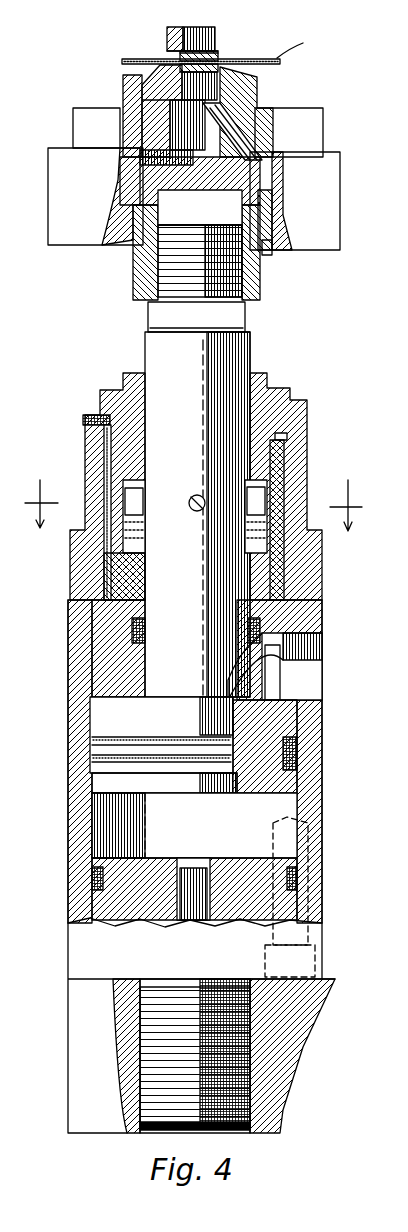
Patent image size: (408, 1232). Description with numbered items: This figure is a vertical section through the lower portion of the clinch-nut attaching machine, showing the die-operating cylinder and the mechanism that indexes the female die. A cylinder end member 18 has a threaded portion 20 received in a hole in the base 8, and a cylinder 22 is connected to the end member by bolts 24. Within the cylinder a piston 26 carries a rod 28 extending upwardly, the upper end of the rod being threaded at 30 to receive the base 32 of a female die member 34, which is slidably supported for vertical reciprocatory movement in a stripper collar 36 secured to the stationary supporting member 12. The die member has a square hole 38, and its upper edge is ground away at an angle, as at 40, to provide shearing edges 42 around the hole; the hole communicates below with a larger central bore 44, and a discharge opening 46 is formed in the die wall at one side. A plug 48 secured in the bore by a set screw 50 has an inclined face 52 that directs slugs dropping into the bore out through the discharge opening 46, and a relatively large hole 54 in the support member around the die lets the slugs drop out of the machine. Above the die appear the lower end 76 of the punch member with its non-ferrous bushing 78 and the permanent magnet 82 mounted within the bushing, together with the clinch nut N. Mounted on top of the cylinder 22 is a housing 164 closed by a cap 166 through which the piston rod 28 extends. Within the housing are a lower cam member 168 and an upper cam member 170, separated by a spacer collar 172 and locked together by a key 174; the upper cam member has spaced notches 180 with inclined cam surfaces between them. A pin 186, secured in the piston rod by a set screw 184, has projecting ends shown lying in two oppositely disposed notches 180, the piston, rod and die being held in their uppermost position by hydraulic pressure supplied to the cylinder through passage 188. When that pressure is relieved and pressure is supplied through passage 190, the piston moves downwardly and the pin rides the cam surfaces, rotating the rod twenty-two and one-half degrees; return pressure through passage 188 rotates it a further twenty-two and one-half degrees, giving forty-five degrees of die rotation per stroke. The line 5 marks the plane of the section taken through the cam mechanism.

The section line 5- 5 is at (190, 288).
The base 8 is at (88, 1083).
The stationary supporting member 12 is at (332, 183).
The cylinder end member 18 is at (87, 935).
The threaded portion 20 is at (177, 1108).
The cylinder 22 is at (105, 803).
The bolts 24 is at (320, 953).
The piston 26 is at (108, 715).
The piston rod 28 is at (152, 658).
The threaded upper end of piston rod 30 is at (170, 258).
The base of female die member 32 is at (150, 250).
The female die member 34 is at (157, 88).
The stripper collar 36 is at (265, 100).
The square hole 38 is at (217, 78).
The angled ground upper edge 40 is at (122, 62).
The shearing edges 42 is at (218, 53).
The central bore 44 is at (167, 100).
The discharge opening 46 is at (257, 135).
The plug 48 is at (173, 175).
The set screw 50 is at (157, 143).
The inclined face 52 is at (250, 168).
The hole 54 is at (267, 250).
The lower end of punch member 76 is at (167, 42).
The bushing 78 is at (172, 33).
The permanent magnet 82 is at (203, 37).
The clinch nut N is at (173, 53).
The housing 164 is at (307, 423).
The cap 166 is at (130, 372).
The lower cam member 168 is at (133, 582).
The upper cam member 170 is at (273, 480).
The spacer collar 172 is at (273, 547).
The key 174 is at (105, 440).
The notches 180 is at (118, 538).
The set screw 184 is at (192, 510).
The pin 186 is at (147, 503).
The passage 188 is at (195, 912).
The passage 190 is at (267, 690).